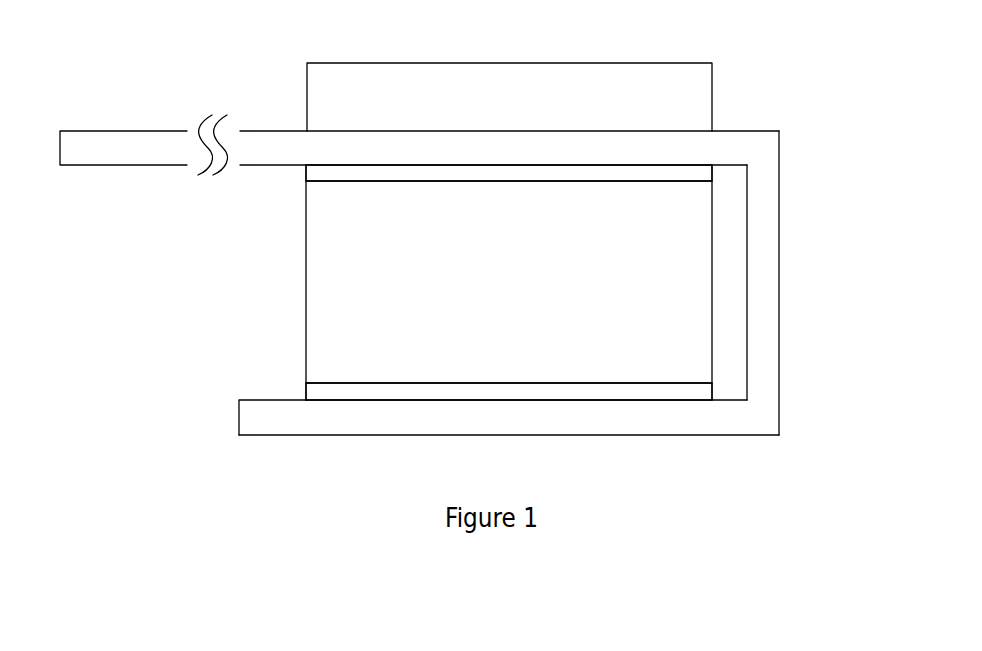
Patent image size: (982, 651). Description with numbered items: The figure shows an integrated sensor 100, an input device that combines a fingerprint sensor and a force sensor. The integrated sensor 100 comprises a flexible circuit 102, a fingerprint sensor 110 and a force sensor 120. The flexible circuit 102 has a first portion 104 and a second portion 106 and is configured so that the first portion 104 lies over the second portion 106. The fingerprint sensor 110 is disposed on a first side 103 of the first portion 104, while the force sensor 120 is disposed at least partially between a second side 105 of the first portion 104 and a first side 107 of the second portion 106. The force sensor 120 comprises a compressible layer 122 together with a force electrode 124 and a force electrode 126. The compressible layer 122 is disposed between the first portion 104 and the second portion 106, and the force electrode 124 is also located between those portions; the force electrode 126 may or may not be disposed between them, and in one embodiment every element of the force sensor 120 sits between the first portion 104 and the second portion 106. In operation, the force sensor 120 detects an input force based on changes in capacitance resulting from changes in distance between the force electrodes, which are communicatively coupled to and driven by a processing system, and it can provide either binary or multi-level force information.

The integrated sensor 100 is at (210, 35).
The flexible circuit 102 is at (782, 233).
The first side of the first portion 103 is at (300, 130).
The first portion 104 is at (753, 130).
The second side of the first portion 105 is at (727, 165).
The second portion 106 is at (779, 420).
The first side of the second portion 107 is at (725, 400).
The fingerprint sensor 110 is at (509, 97).
The force sensor 120 is at (150, 172).
The compressible layer 122 is at (509, 282).
The force electrode 124 is at (306, 170).
The force electrode 126 is at (303, 390).